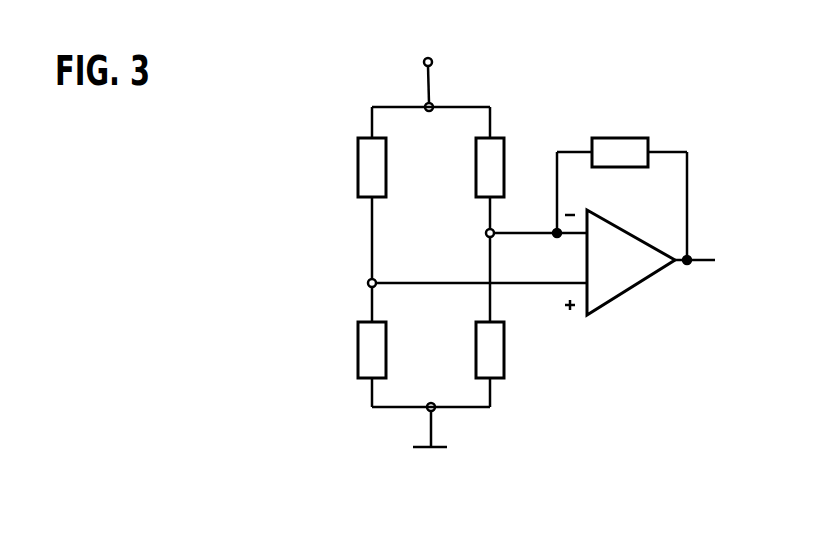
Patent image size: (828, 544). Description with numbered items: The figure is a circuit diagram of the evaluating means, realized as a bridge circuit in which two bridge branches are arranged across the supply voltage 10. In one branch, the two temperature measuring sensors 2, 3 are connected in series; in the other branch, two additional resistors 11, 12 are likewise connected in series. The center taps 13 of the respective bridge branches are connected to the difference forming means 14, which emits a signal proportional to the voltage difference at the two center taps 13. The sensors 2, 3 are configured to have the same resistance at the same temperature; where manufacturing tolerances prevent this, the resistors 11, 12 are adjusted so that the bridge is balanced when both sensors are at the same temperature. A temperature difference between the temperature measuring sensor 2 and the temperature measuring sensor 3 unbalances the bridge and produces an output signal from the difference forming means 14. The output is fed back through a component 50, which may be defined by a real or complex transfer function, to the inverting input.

The temperature measuring sensor 2 is at (370, 170).
The temperature measuring sensor 3 is at (370, 352).
The supply voltage 10 is at (432, 62).
The additional resistor 11 is at (493, 350).
The additional resistor 12 is at (493, 165).
The center tap 13 is at (486, 233).
The difference forming means 14 is at (645, 248).
The component 50 is at (624, 140).